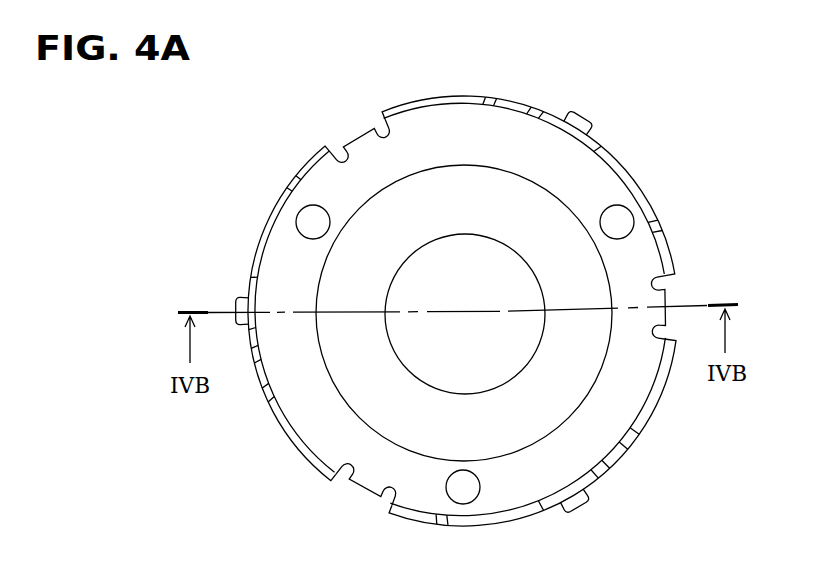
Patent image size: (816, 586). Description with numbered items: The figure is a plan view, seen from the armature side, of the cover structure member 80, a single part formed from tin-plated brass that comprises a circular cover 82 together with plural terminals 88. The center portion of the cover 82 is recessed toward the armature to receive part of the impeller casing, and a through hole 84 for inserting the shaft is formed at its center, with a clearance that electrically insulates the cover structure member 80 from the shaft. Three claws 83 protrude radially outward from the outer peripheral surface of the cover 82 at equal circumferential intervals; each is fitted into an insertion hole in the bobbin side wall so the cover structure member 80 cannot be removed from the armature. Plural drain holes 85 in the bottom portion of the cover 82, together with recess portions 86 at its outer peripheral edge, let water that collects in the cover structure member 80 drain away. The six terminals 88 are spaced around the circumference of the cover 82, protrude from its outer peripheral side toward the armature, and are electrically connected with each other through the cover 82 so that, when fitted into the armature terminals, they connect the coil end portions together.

The cover structure member 80 is at (471, 81).
The cover 82 is at (625, 378).
The claws 83 is at (590, 117).
The through hole 84 is at (453, 266).
The drain holes 85 is at (305, 222).
The recess portions 86 is at (330, 157).
The terminals 88 is at (507, 103).